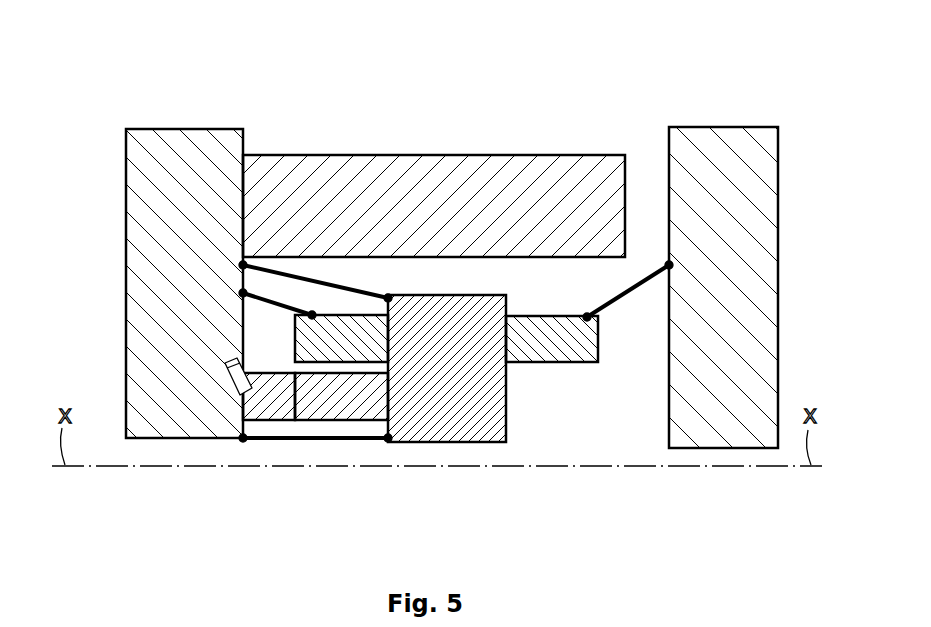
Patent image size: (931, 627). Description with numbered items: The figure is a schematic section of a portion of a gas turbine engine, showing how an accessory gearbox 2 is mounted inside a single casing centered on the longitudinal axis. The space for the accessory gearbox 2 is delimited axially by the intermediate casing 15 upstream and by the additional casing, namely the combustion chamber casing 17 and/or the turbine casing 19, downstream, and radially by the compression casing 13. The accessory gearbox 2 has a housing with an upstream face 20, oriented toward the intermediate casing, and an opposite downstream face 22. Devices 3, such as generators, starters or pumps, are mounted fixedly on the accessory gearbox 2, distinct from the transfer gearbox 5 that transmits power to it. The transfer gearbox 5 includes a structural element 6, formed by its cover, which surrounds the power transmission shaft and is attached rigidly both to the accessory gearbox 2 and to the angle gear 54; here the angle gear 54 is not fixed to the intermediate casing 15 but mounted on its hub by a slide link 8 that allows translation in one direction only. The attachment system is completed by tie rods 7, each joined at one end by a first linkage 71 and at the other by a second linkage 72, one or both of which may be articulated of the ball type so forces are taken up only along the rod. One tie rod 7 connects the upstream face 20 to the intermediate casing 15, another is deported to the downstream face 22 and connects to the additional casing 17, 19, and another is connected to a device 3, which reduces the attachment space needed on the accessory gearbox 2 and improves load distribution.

The accessory gearbox 2 is at (508, 310).
The device 3 is at (301, 324).
The transfer gearbox 5 is at (292, 428).
The structural element 6 is at (365, 397).
The tie rod 7 is at (625, 293).
The slide link 8 is at (226, 371).
The compression casing 13 is at (463, 165).
The intermediate casing 15 is at (180, 427).
The combustion chamber casing 17 is at (723, 252).
The turbine casing 19 is at (726, 133).
The upstream face 20 is at (384, 310).
The downstream face 22 is at (508, 430).
The angle gear 54 is at (275, 382).
The first linkage 71 is at (395, 302).
The second linkage 72 is at (248, 262).